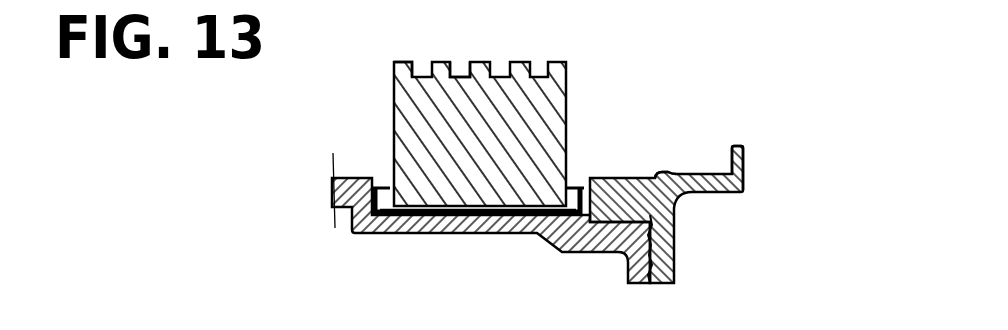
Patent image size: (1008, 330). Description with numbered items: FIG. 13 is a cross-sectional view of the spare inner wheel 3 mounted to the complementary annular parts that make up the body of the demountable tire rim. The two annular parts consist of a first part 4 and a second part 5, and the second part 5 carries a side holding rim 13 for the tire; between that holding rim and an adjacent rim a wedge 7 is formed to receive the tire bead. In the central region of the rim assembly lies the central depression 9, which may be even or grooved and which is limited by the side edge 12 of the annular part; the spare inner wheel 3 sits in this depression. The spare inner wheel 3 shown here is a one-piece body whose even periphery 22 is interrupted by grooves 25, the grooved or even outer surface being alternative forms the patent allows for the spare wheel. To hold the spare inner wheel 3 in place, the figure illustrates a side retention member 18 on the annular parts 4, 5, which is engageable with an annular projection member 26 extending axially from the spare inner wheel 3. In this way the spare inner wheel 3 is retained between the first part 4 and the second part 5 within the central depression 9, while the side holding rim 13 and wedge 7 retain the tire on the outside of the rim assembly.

The spare inner wheel 3 is at (370, 123).
The first part 4 is at (352, 251).
The second part 5 is at (716, 215).
The wedge 7 is at (699, 157).
The central depression 9 is at (458, 213).
The side edge 12 is at (391, 183).
The side holding rim 13 is at (743, 173).
The side retention member 18 is at (333, 150).
The even periphery 22 is at (405, 62).
The groove 25 is at (462, 72).
The annular projection member 26 is at (562, 252).